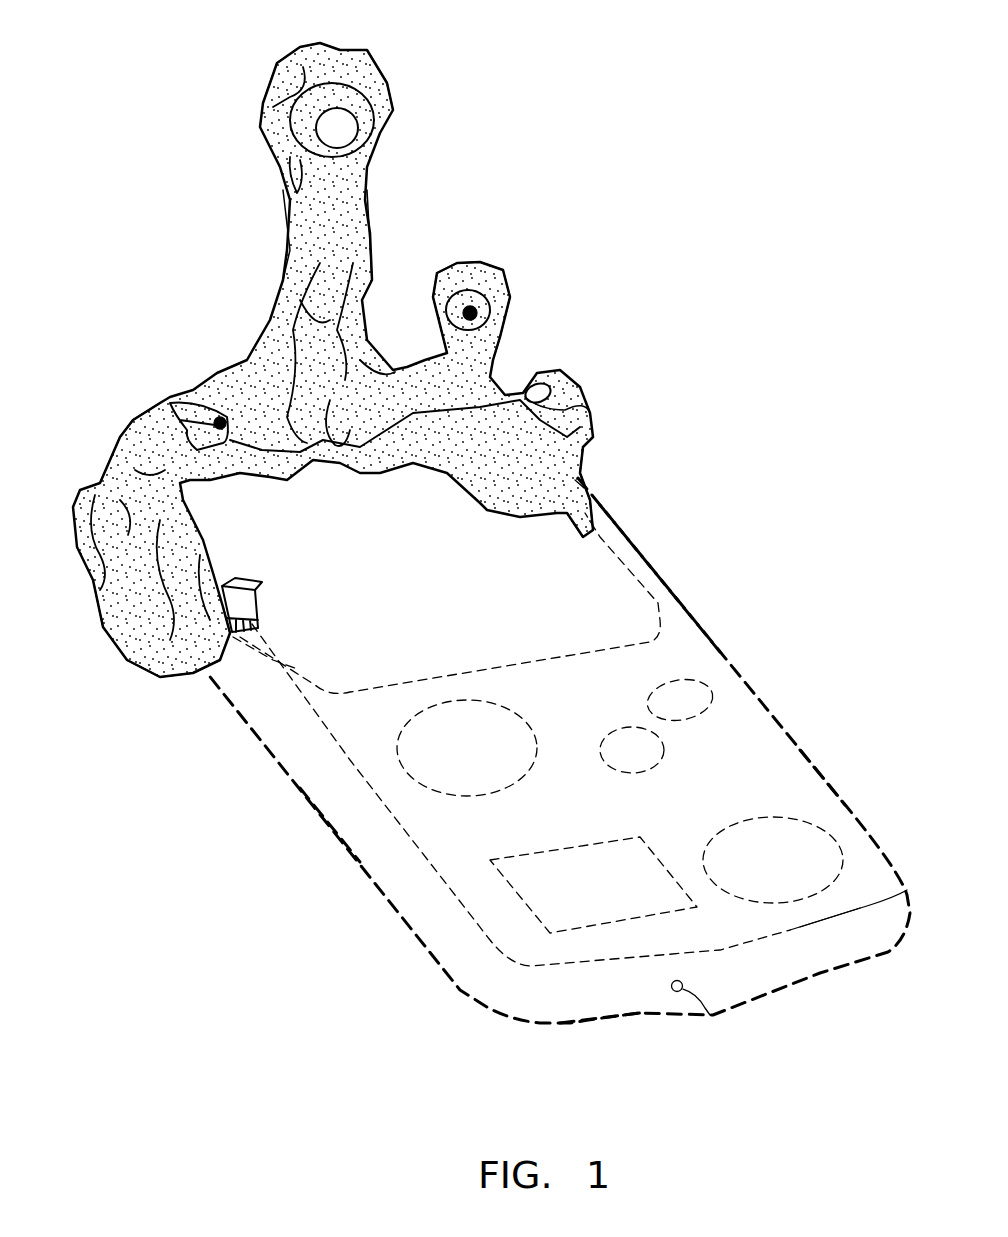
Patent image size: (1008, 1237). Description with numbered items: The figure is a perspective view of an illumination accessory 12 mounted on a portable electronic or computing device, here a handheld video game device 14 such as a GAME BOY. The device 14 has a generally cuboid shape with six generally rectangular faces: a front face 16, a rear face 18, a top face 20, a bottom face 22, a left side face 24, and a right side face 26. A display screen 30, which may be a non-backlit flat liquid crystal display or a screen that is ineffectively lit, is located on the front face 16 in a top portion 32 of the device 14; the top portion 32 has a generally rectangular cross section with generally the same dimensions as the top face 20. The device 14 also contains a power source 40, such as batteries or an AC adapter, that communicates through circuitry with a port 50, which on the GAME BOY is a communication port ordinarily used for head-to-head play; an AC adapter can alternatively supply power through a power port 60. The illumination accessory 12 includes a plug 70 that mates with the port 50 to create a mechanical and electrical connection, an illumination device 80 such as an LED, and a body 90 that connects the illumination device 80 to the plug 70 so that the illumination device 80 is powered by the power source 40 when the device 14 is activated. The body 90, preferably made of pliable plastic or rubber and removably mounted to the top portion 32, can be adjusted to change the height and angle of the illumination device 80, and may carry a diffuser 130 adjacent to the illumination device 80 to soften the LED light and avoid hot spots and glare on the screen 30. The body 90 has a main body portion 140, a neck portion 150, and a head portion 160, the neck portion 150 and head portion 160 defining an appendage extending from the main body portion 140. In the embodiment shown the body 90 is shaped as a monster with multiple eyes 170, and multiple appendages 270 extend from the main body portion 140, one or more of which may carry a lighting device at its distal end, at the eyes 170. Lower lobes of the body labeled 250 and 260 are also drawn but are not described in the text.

The illumination accessory 12 is at (518, 149).
The handheld video game device 14 is at (803, 690).
The front face 16 is at (707, 645).
The rear face 18 is at (592, 1033).
The top face 20 is at (360, 470).
The bottom face 22 is at (800, 950).
The left side face 24 is at (343, 822).
The right side face 26 is at (847, 805).
The display screen 30 is at (677, 582).
The top portion 32 is at (628, 503).
The power source 40 is at (567, 840).
The port 50 is at (245, 642).
The power port 60 is at (708, 1016).
The plug 70 is at (245, 588).
The illumination device 80 is at (347, 80).
The body 90 is at (152, 330).
The diffuser 130 is at (327, 130).
The main body portion 140 is at (537, 348).
The neck portion 150 is at (367, 200).
The head portion 160 is at (403, 100).
The eyes 170 is at (333, 118).
The lower lobe 250 is at (133, 672).
The thumb projection 260 is at (592, 497).
The appendages 270 is at (483, 267).